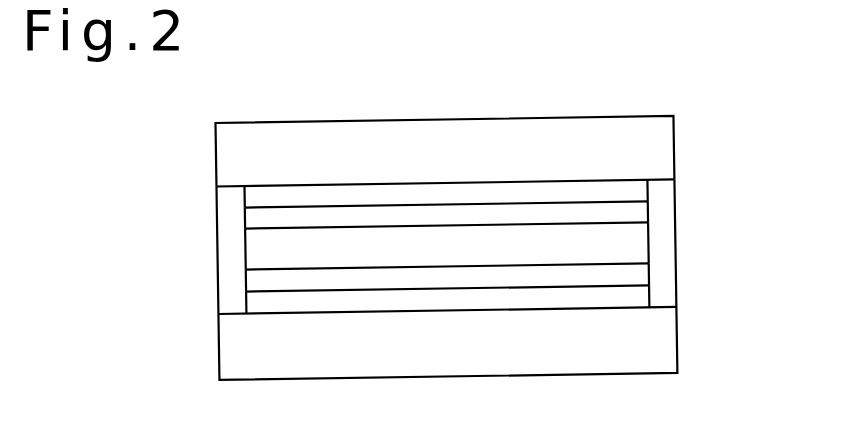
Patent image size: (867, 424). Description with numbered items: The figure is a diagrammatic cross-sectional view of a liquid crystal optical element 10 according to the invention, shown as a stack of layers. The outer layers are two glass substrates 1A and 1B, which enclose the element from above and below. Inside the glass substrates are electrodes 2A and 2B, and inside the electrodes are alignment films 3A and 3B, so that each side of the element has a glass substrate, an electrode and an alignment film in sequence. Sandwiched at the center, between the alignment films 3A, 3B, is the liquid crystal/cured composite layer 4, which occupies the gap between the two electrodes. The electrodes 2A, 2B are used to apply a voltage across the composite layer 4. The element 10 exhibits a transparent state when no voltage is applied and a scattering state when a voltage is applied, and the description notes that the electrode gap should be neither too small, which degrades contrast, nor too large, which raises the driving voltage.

The liquid crystal optical element 10 is at (113, 153).
The glass substrate 1A is at (643, 136).
The glass substrate 1B is at (665, 329).
The electrode 2A is at (640, 190).
The electrode 2B is at (637, 296).
The alignment film 3A is at (612, 210).
The alignment film 3B is at (612, 274).
The liquid crystal/cured composite layer 4 is at (291, 249).